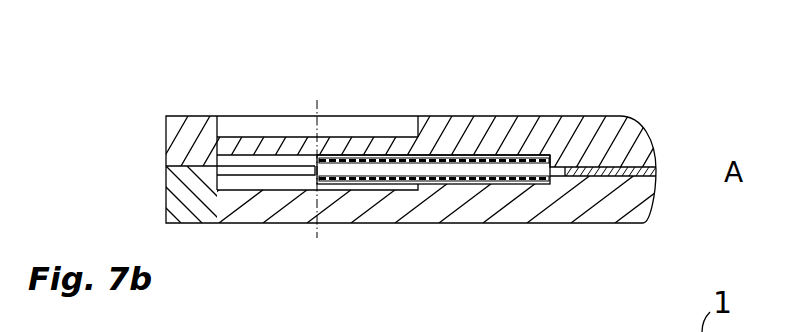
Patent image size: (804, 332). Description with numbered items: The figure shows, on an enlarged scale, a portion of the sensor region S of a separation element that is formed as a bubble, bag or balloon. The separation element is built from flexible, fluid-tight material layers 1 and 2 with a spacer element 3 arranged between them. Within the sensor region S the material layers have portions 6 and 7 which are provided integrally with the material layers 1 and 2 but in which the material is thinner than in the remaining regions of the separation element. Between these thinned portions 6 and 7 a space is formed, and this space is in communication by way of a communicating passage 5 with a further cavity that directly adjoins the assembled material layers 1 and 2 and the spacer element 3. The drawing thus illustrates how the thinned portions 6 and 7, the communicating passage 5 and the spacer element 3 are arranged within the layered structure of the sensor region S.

The material layer 1 is at (603, 135).
The material layer 2 is at (470, 213).
The spacer element 3 is at (633, 172).
The communicating passage 5 is at (505, 172).
The portion of material layer 6 is at (297, 148).
The portion of material layer 7 is at (287, 203).
The sensor region S is at (240, 94).